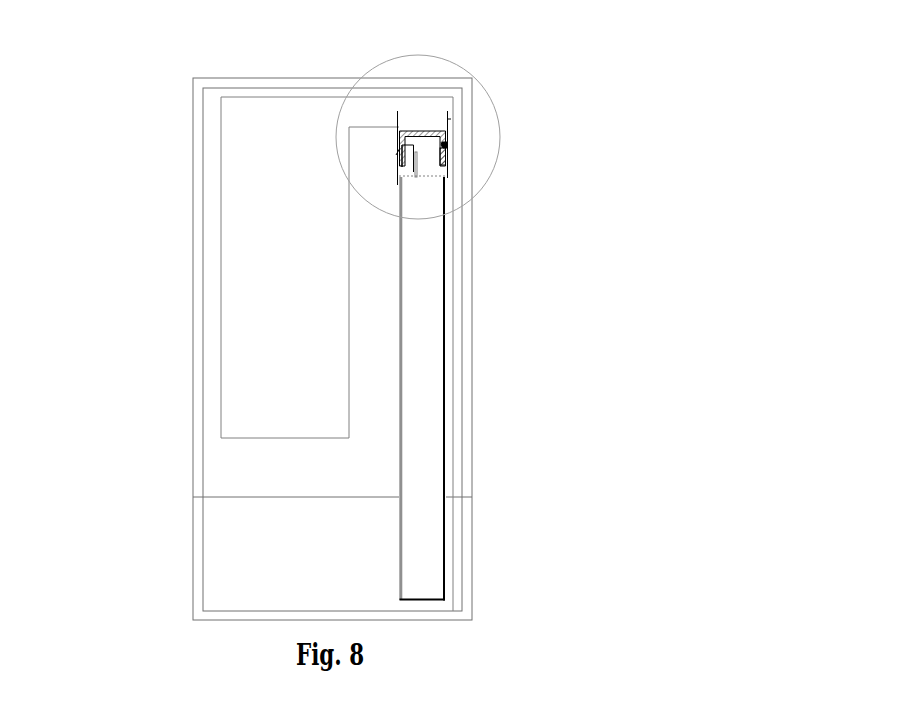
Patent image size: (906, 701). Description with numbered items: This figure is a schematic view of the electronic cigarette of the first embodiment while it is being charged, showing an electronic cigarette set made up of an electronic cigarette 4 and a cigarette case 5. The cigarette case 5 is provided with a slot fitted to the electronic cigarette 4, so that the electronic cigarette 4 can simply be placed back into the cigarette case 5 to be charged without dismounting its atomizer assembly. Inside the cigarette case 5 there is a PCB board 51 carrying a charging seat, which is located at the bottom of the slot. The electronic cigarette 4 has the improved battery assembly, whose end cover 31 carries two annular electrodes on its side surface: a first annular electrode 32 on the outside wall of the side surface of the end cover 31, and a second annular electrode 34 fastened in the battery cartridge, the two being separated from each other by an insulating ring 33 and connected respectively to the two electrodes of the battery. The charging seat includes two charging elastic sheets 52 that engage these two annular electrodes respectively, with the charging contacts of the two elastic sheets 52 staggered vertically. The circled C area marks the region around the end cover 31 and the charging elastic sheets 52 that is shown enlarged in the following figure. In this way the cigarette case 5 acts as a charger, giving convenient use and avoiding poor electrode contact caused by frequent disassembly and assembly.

The cigarette case 5 is at (250, 531).
The PCB board 51 is at (241, 354).
The electronic cigarette 4 is at (487, 389).
The C area C is at (400, 120).
The charging elastic sheets 52 is at (400, 120).
The end cover 31 is at (450, 91).
The first annular electrode 32 is at (491, 145).
The insulating ring 33 is at (513, 158).
The second annular electrode 34 is at (513, 181).